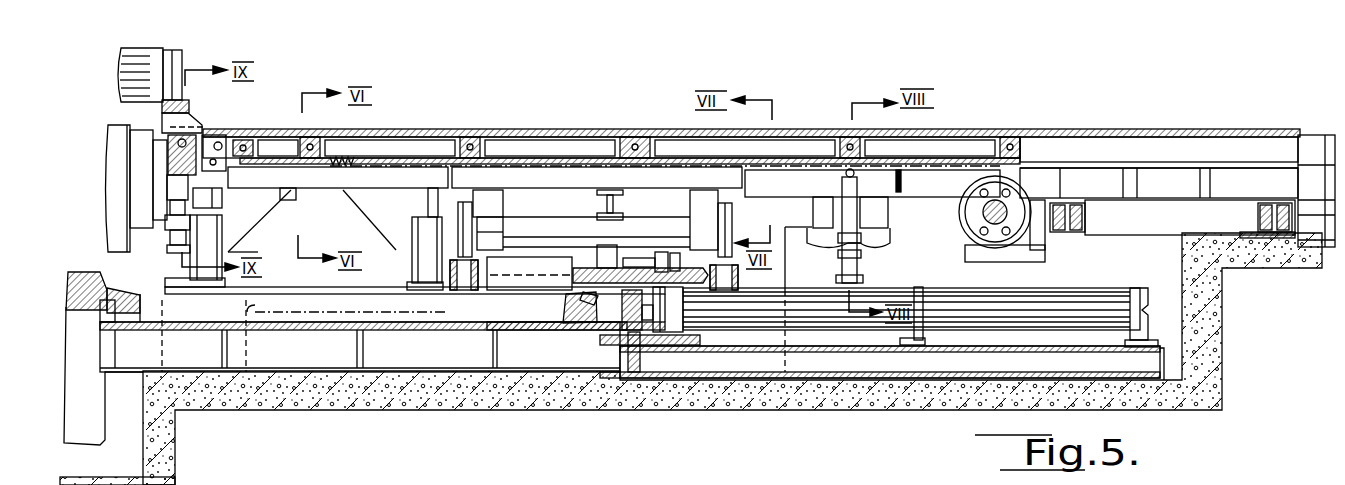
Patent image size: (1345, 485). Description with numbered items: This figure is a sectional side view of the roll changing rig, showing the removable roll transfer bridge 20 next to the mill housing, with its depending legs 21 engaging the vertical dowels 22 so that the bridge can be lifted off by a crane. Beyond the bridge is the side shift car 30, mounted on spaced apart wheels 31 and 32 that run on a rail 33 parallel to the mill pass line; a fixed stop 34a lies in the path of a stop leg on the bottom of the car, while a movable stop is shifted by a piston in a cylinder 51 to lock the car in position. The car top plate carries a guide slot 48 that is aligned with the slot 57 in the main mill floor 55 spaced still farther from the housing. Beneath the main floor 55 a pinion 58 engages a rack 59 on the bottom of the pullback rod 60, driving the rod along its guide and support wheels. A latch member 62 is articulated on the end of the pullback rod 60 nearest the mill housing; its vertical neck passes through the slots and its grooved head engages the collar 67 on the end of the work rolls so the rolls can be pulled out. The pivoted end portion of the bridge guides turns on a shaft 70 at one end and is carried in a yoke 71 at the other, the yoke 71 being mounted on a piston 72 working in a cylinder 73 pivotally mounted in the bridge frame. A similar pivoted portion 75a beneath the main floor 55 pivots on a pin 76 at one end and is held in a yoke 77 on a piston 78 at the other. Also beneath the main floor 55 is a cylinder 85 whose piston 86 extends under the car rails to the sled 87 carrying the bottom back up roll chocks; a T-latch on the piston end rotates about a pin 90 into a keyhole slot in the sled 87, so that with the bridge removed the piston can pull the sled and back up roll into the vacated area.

The roll transfer bridge 20 is at (327, 178).
The depending legs 21 is at (222, 203).
The vertical dowels 22 is at (215, 238).
The side shift car 30 is at (575, 162).
The wheel 31 is at (720, 218).
The wheel 32 is at (463, 237).
The rail 33 is at (730, 277).
The fixed stop 34a is at (523, 282).
The guide slot 48 is at (597, 130).
The cylinder 51 is at (680, 252).
The main mill floor 55 is at (1113, 135).
The slot 57 is at (788, 132).
The pinion 58 is at (1023, 217).
The rack 59 is at (347, 155).
The pullback rod 60 is at (433, 147).
The latch member 62 is at (242, 127).
The collar 67 is at (172, 52).
The shaft 70 is at (217, 165).
The yoke 71 is at (185, 182).
The piston 72 is at (187, 202).
The cylinder 73 is at (175, 240).
The block 75a is at (200, 135).
The pin 76 is at (846, 173).
The yoke 77 is at (900, 180).
The piston 78 is at (857, 263).
The cylinder 85 is at (793, 300).
The piston 86 is at (633, 323).
The sled 87 is at (88, 317).
The pin 90 is at (568, 325).